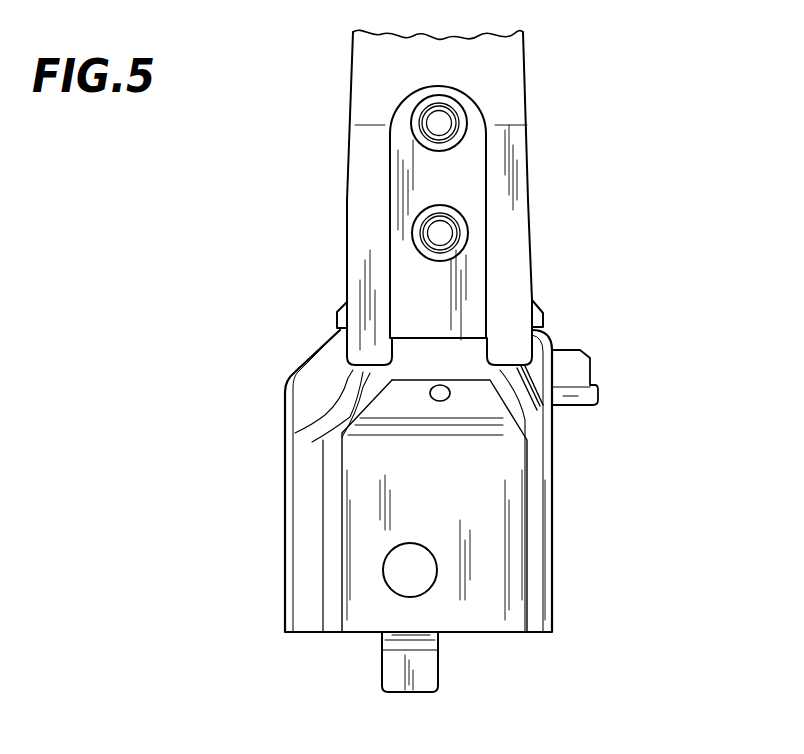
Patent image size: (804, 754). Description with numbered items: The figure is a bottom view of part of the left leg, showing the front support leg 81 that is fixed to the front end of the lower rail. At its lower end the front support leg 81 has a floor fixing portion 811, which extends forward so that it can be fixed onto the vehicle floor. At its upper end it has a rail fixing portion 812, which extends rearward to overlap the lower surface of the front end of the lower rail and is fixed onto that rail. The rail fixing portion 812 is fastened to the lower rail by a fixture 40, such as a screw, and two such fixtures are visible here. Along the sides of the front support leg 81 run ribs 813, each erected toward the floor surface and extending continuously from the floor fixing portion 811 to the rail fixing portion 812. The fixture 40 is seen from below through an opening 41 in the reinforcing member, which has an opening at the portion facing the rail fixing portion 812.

The fixture 40 is at (466, 116).
The opening 41 is at (393, 143).
The front support leg 81 is at (560, 476).
The floor fixing portion 811 is at (503, 622).
The rail fixing portion 812 is at (463, 185).
The rib 813 is at (310, 382).